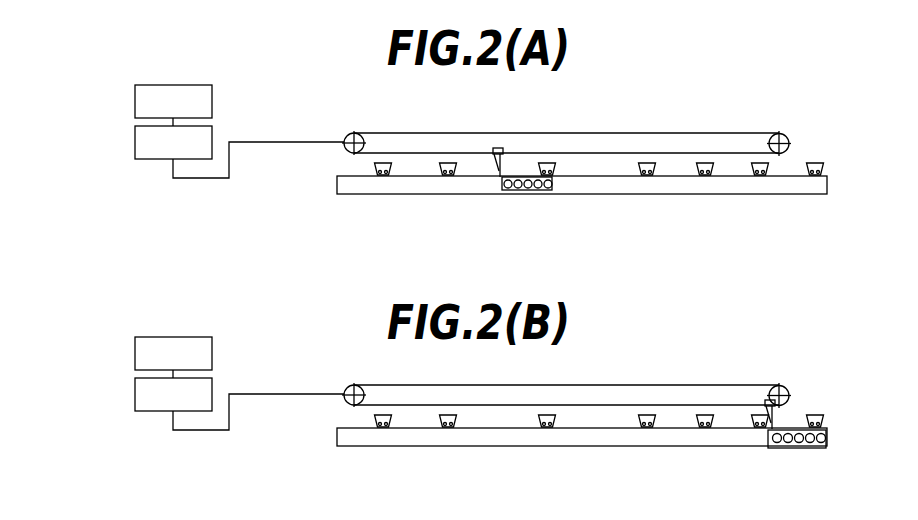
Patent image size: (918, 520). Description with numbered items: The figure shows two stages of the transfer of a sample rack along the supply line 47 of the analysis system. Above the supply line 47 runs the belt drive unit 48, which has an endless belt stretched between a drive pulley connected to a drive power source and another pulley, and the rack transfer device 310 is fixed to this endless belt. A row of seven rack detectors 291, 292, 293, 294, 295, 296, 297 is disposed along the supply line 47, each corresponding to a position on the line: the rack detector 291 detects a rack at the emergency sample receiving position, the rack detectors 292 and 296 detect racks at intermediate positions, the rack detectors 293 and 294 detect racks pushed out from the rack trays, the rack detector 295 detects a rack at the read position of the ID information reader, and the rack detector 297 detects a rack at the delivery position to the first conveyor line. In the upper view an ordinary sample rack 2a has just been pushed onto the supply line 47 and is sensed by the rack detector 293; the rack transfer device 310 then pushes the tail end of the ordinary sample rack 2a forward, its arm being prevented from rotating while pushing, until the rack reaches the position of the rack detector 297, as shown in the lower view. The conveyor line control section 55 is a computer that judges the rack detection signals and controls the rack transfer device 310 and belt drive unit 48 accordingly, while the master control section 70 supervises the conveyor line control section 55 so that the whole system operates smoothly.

In FIG. 2A, the master control section 70 is at (135, 105).
In FIG. 2B, the master control section 70 is at (135, 357).
In FIG. 2A, the conveyor line control section 55 is at (135, 143).
In FIG. 2B, the conveyor line control section 55 is at (135, 395).
In FIG. 2A, the belt drive unit 48 is at (345, 140).
In FIG. 2B, the belt drive unit 48 is at (345, 392).
In FIG. 2A, the supply line 47 is at (337, 181).
In FIG. 2B, the supply line 47 is at (337, 433).
In FIG. 2A, the rack detector 291 is at (382, 162).
In FIG. 2A, the rack detector 292 is at (447, 162).
In FIG. 2A, the rack detector 293 is at (546, 162).
In FIG. 2A, the rack detector 294 is at (646, 162).
In FIG. 2A, the rack detector 295 is at (704, 162).
In FIG. 2A, the rack detector 296 is at (759, 162).
In FIG. 2A, the rack detector 297 is at (814, 162).
In FIG. 2B, the rack detector 297 is at (813, 414).
In FIG. 2A, the rack transfer device 310 is at (492, 180).
In FIG. 2B, the rack transfer device 310 is at (760, 432).
In FIG. 2A, the ordinary sample rack 2a is at (530, 192).
In FIG. 2B, the ordinary sample rack 2a is at (805, 445).